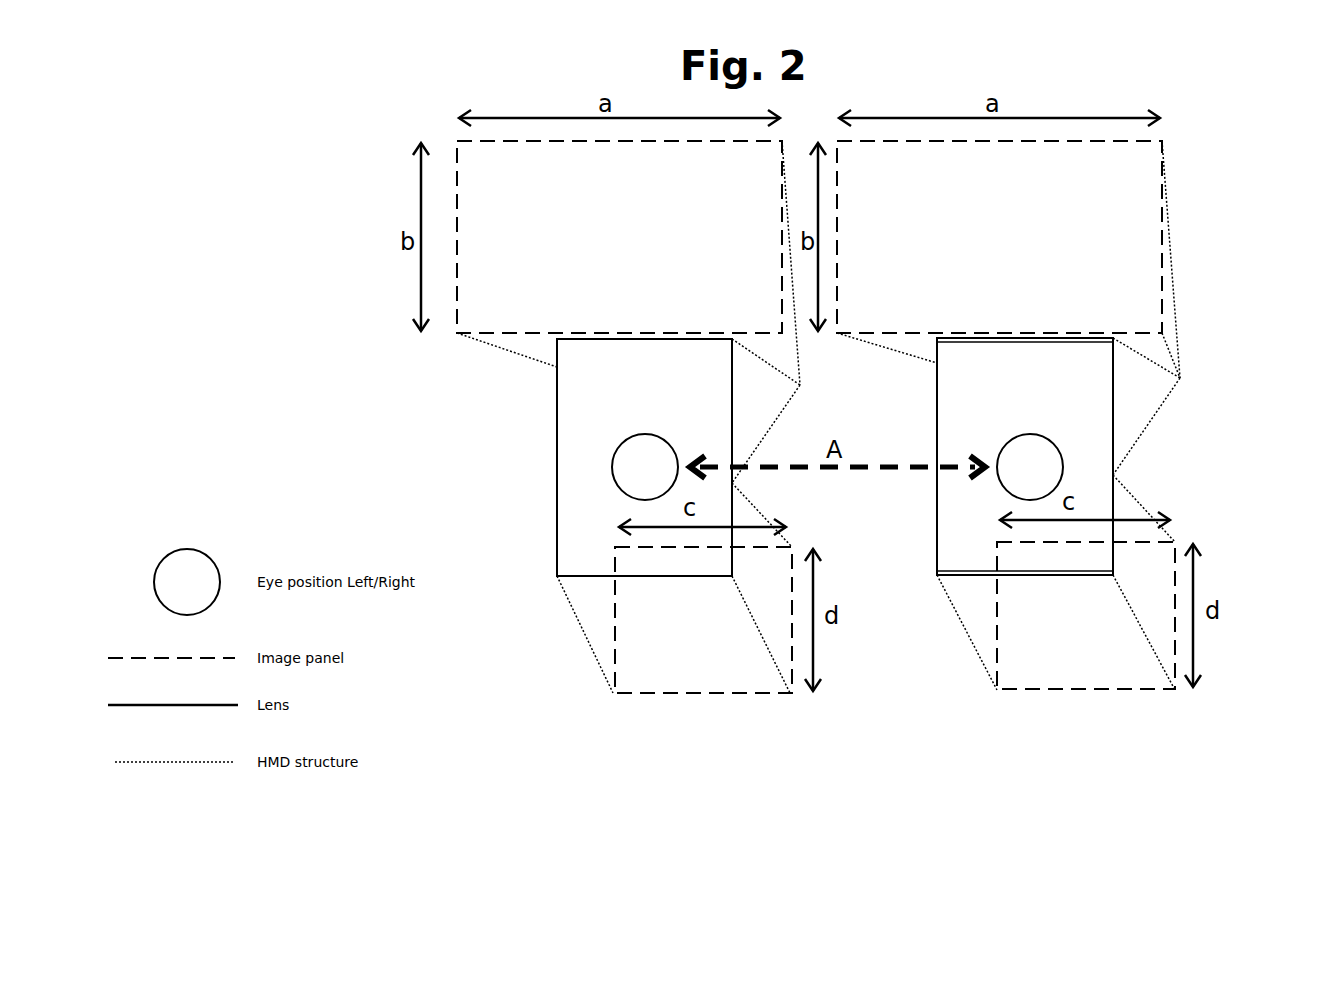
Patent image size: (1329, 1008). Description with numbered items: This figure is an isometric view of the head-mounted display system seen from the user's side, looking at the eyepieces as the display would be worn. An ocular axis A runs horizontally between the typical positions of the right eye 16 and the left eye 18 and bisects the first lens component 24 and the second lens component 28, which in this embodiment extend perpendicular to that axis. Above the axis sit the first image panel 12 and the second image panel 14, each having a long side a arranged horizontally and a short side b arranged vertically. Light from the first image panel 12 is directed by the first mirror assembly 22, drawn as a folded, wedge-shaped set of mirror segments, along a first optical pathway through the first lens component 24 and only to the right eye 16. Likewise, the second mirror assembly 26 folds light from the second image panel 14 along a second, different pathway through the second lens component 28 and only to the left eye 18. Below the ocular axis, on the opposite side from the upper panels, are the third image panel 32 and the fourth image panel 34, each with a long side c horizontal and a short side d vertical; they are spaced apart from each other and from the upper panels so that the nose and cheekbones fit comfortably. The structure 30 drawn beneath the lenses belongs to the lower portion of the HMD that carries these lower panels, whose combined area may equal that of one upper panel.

The first image panel 12 is at (473, 213).
The second image panel 14 is at (1128, 230).
The right eye 16 is at (612, 467).
The left eye 18 is at (1070, 457).
The first mirror assembly 22 is at (476, 356).
The first lens component 24 is at (562, 398).
The second mirror assembly 26 is at (1180, 280).
The second lens component 28 is at (1002, 377).
The lower HMD structure 30 is at (578, 637).
The third image panel 32 is at (692, 663).
The fourth image panel 34 is at (1150, 597).